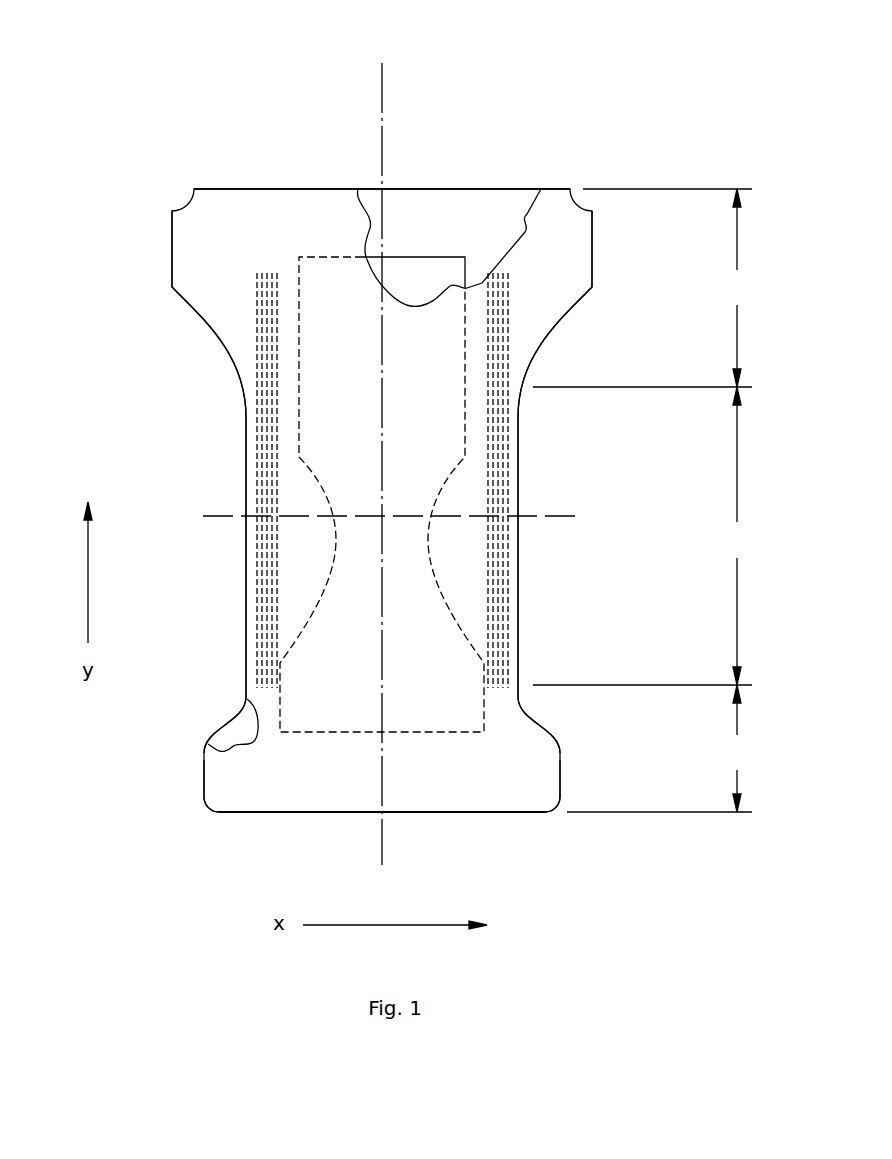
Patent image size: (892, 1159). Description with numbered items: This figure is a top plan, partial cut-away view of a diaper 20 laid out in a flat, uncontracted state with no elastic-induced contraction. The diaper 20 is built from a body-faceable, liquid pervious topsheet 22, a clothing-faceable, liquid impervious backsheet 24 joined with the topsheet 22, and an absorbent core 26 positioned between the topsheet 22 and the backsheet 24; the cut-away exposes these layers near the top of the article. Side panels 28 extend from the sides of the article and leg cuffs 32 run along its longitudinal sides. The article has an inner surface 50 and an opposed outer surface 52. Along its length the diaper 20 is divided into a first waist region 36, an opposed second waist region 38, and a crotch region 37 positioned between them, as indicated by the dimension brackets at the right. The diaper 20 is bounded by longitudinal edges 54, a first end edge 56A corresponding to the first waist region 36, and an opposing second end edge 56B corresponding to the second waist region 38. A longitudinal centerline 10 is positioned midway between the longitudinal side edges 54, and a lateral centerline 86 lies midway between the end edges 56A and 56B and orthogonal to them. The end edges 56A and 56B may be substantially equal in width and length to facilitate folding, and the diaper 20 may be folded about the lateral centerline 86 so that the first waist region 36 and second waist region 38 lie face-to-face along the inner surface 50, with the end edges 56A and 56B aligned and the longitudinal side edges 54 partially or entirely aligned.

The longitudinal centerline 10 is at (382, 100).
The diaper 20 is at (150, 437).
The topsheet 22 is at (265, 792).
The backsheet 24 is at (478, 225).
The absorbent core 26 is at (406, 285).
The side panels 28 is at (238, 335).
The leg cuffs 32 is at (246, 560).
The first waist region 36 is at (659, 748).
The crotch region 37 is at (642, 536).
The second waist region 38 is at (642, 288).
The inner surface 50 is at (338, 495).
The outer surface 52 is at (240, 728).
The longitudinal edges 54 is at (246, 452).
The first end edge 56A is at (407, 812).
The second end edge 56B is at (302, 188).
The lateral centerline 86 is at (405, 516).